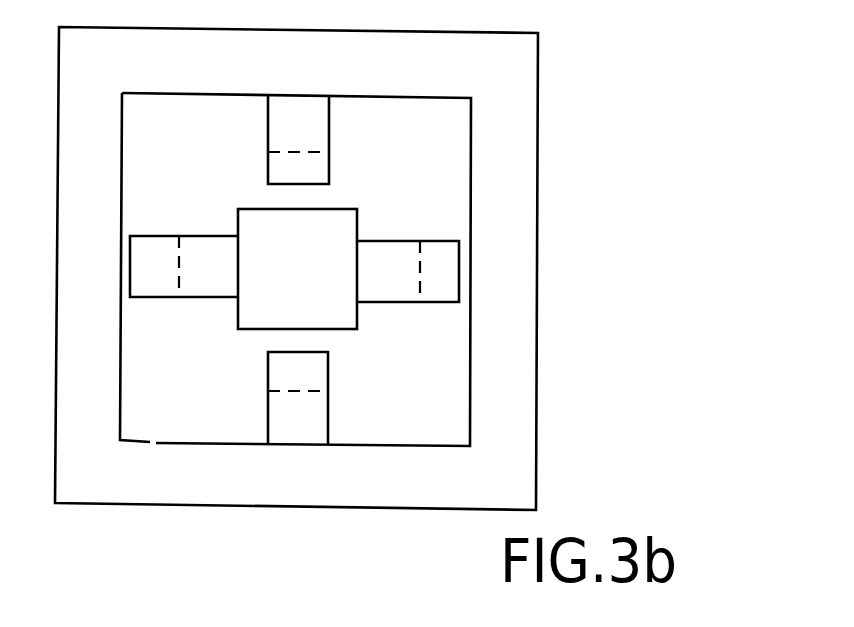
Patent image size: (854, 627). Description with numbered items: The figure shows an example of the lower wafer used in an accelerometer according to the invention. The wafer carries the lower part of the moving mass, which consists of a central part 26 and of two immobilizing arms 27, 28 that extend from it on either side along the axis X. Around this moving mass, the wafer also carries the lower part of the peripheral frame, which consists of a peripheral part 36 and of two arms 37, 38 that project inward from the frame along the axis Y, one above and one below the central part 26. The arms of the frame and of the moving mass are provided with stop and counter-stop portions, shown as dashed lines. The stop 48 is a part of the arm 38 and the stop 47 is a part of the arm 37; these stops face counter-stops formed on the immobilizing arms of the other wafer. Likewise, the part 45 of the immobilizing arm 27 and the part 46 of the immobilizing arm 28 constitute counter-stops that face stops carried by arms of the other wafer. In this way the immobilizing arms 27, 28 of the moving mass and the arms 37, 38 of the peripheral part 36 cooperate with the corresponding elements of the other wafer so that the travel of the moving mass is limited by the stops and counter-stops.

The central plate 26 is at (345, 222).
The immobilizing arm 27 is at (203, 283).
The immobilizing arm 28 is at (394, 286).
The peripheral part 36 is at (513, 197).
The arm 37 is at (320, 420).
The arm 38 is at (320, 135).
The counter-stop part of immobilizing arm 45 is at (157, 258).
The counter-stop part of immobilizing arm 46 is at (437, 263).
The stop part of arm 47 is at (280, 375).
The stop part of arm 48 is at (283, 172).